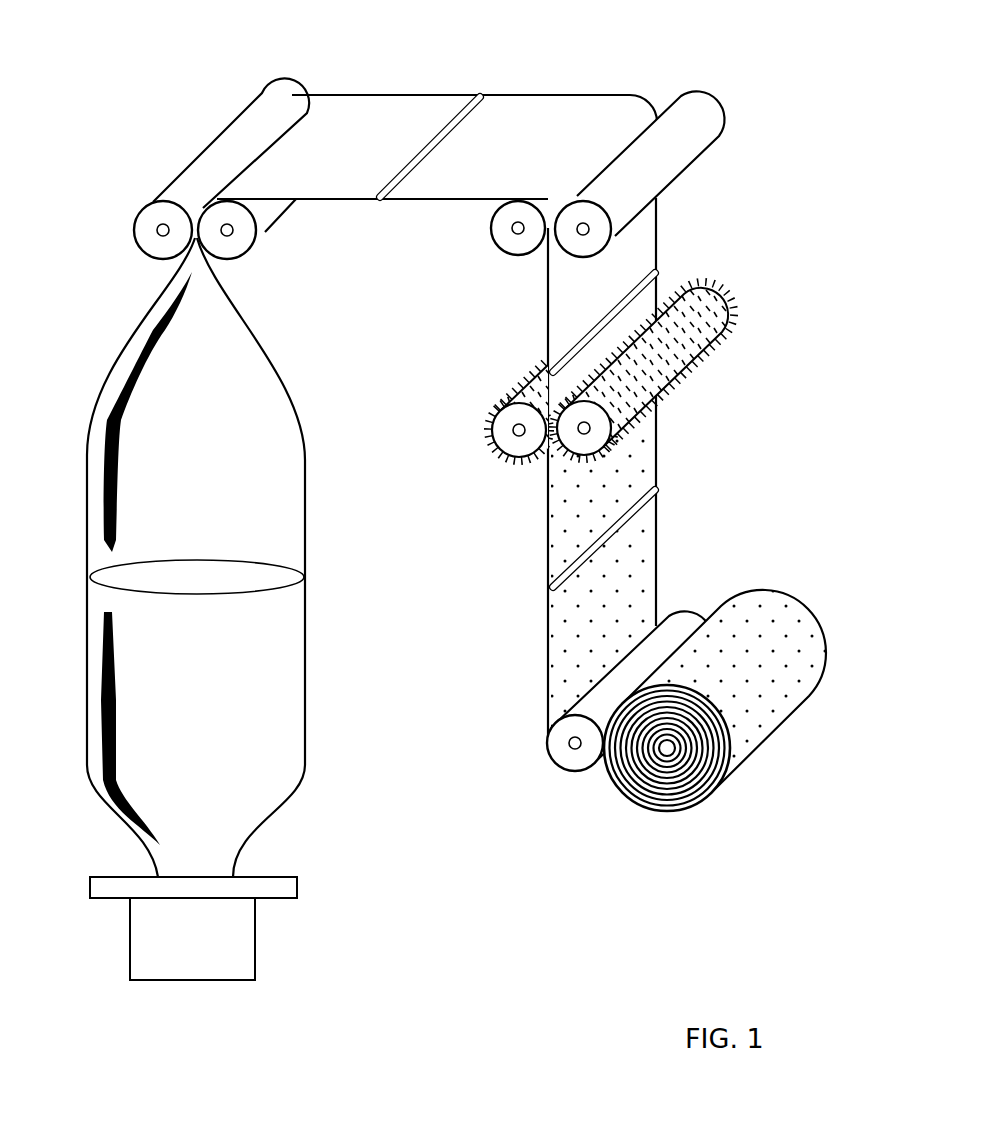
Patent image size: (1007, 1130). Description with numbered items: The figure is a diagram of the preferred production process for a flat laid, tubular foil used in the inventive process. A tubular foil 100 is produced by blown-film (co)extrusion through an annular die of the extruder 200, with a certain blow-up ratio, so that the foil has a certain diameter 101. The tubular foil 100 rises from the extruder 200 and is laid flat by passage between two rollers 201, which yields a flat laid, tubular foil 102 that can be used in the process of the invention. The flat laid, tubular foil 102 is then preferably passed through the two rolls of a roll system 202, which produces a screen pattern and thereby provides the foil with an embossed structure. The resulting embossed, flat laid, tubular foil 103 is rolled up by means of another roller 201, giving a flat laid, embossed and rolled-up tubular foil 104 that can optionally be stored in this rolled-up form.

The tubular foil 100 is at (250, 717).
The diameter 101 is at (300, 585).
The flat laid, tubular foil 102 is at (523, 117).
The embossed, flat laid, tubular foil 103 is at (642, 473).
The flat laid, embossed and rolled-up tubular foil 104 is at (772, 710).
The extruder 200 is at (240, 957).
The rollers 201 is at (220, 157).
The roll system 202 is at (507, 440).